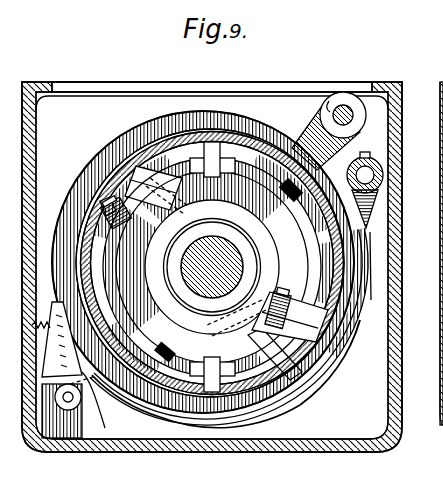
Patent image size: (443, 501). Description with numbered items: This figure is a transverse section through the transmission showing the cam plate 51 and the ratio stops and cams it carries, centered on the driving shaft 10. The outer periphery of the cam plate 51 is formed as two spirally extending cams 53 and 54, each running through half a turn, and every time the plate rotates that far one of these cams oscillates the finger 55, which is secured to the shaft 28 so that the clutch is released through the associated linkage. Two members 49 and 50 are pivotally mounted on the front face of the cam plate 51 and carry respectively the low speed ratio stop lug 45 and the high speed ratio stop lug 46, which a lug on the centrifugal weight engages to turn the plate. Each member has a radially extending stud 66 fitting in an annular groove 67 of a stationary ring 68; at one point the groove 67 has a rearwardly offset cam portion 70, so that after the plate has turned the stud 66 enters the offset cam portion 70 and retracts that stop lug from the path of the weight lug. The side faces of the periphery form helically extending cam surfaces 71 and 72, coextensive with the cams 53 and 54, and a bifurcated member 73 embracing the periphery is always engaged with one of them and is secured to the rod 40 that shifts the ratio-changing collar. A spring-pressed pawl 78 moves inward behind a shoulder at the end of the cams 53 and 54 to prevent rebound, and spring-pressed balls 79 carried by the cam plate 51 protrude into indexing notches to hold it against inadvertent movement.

The driving shaft 10 is at (211, 267).
The shaft 28 is at (384, 176).
The rod 40 is at (344, 104).
The low speed ratio stop lug 45 is at (276, 293).
The high speed ratio stop lug 46 is at (140, 238).
The member 49 is at (290, 335).
The member 50 is at (165, 155).
The cam plate 51 is at (152, 333).
The spirally extending cam 53 is at (149, 127).
The spirally extending cam 54 is at (296, 402).
The finger 55 is at (364, 221).
The stud 66 is at (117, 177).
The annular groove 67 is at (256, 407).
The stationary ring 68 is at (297, 186).
The offset cam portion 70 is at (323, 307).
The helically extending cam surface 71 is at (252, 130).
The helically extending cam surface 72 is at (152, 402).
The bifurcated member 73 is at (309, 130).
The spring-pressed pawl 78 is at (80, 370).
The spring-pressed balls 79 is at (214, 182).